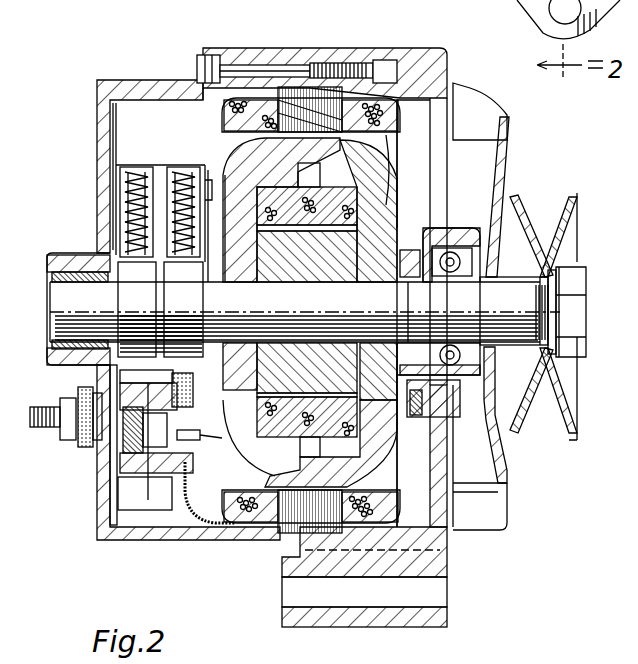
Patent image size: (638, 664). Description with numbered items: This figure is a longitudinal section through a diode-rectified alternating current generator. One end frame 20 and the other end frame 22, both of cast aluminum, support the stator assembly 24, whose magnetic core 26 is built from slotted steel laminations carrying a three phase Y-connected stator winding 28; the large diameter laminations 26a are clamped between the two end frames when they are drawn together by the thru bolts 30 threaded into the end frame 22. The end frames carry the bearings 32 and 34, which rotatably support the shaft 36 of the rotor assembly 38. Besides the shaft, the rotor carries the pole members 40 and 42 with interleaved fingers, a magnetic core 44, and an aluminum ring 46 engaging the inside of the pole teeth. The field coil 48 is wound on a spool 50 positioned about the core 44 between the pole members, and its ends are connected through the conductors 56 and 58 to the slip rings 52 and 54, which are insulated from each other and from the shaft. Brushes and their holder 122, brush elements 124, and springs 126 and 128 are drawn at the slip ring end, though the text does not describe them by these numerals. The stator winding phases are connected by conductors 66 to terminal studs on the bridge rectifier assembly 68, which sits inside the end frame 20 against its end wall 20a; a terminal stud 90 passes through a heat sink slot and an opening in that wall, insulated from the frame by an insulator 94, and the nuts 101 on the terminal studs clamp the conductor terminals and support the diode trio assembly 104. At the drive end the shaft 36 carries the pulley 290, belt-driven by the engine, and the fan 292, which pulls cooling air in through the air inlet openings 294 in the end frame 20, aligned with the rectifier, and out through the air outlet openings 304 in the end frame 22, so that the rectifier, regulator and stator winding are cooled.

The end frame 20 is at (130, 80).
The end wall 20a is at (114, 156).
The end frame 22 is at (448, 72).
The stator assembly 24 is at (400, 162).
The magnetic core 26 is at (282, 88).
The large diameter laminations 26a is at (305, 548).
The stator winding 28 is at (397, 118).
The thru bolts 30 is at (233, 62).
The bearing 32 is at (60, 256).
The bearing 34 is at (452, 250).
The shaft 36 is at (513, 293).
The rotor assembly 38 is at (388, 196).
The pole member 40 is at (380, 228).
The pole member 42 is at (245, 160).
The core 44 is at (336, 282).
The aluminum ring 46 is at (320, 167).
The field coil 48 is at (337, 231).
The spool 50 is at (307, 225).
The slip ring 52 is at (108, 350).
The slip ring 54 is at (200, 326).
The conductor 56 is at (226, 250).
The conductor 58 is at (232, 378).
The conductors 66 is at (188, 495).
The bridge rectifier assembly 68 is at (139, 522).
The terminal stud 90 is at (50, 428).
The insulator 94 is at (86, 448).
The nuts 101 is at (205, 435).
The diode assembly 104 is at (190, 398).
The brush holder 122 is at (100, 215).
The brush 124 is at (182, 264).
The brush spring 126 is at (148, 172).
The brush spring 128 is at (182, 172).
The pulley 290 is at (570, 440).
The fan 292 is at (492, 518).
The air inlet openings 294 is at (110, 468).
The air outlet openings 304 is at (440, 193).